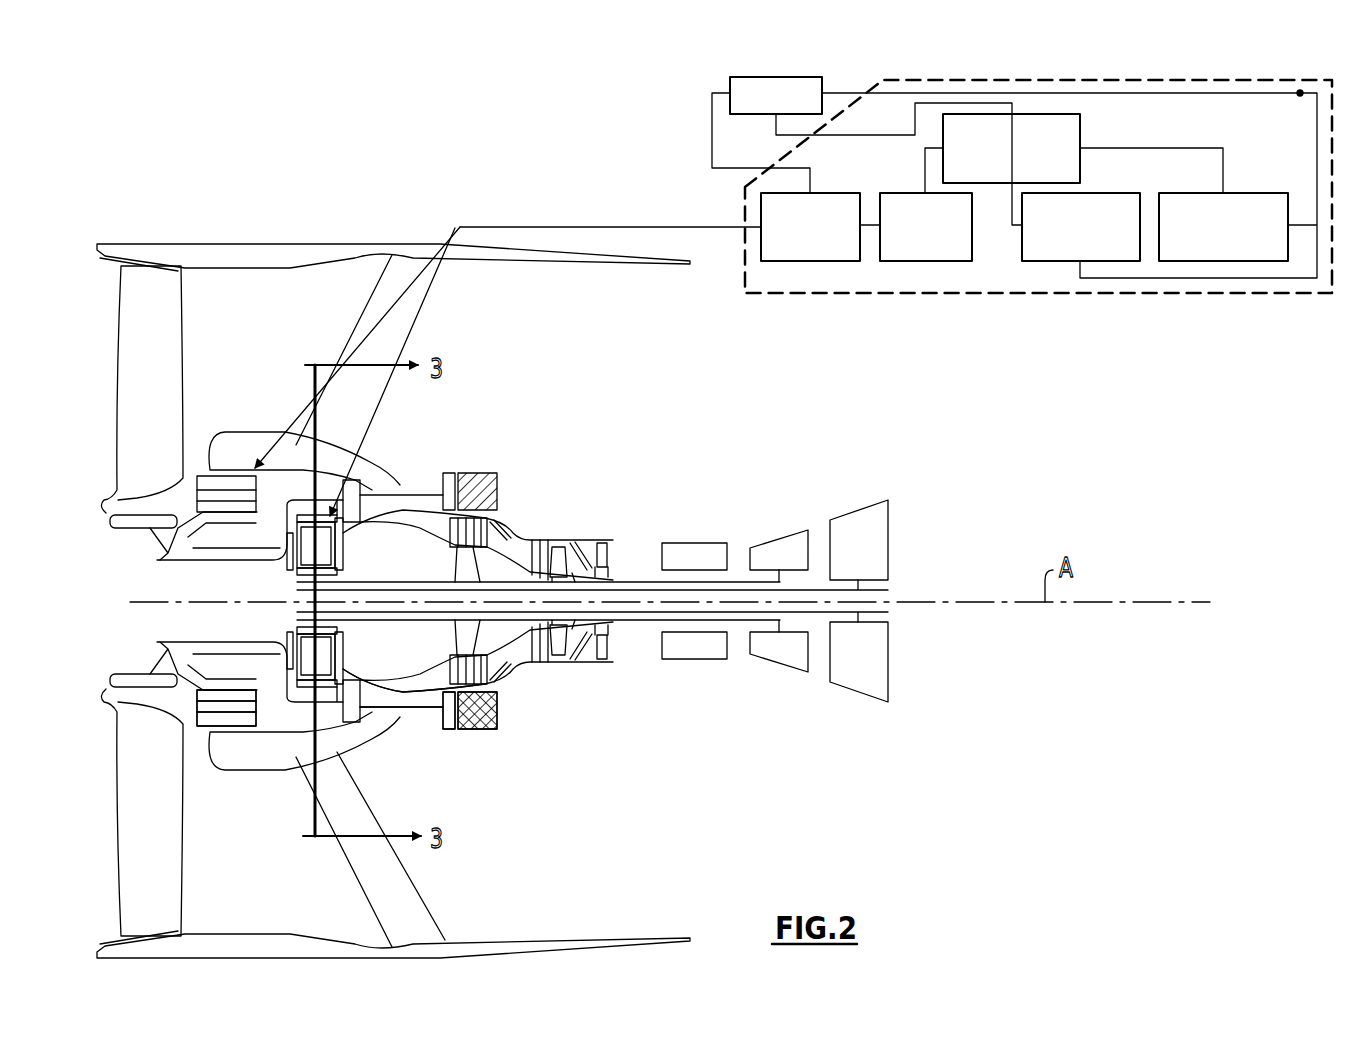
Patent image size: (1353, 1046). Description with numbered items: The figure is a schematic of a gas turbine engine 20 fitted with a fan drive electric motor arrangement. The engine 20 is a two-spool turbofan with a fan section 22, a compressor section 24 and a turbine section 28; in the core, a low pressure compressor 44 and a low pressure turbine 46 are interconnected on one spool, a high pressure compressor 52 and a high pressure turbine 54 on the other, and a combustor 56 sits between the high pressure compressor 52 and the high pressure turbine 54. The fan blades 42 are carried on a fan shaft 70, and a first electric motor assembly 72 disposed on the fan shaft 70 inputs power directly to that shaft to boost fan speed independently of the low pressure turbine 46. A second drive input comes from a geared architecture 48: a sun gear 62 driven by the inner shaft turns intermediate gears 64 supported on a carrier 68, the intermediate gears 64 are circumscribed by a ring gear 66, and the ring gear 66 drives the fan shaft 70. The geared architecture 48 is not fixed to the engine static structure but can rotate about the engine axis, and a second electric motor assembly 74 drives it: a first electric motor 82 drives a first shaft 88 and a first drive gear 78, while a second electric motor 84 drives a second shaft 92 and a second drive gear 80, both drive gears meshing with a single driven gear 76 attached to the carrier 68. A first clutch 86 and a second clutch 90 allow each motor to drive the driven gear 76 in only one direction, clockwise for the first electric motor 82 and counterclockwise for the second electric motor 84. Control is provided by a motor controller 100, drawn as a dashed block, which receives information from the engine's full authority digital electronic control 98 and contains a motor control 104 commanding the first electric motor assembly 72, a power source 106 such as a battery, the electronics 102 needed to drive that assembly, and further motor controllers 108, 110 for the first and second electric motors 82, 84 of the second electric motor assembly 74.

The gas turbine engine 20 is at (419, 198).
The fan section 22 is at (97, 216).
The compressor section 24 is at (442, 408).
The turbine section 28 is at (750, 408).
The fan blades 42 is at (166, 405).
The low pressure compressor 44 is at (512, 518).
The low pressure turbine 46 is at (888, 527).
The geared architecture 48 is at (271, 662).
The high pressure compressor 52 is at (590, 532).
The high pressure turbine 54 is at (810, 550).
The combustor 56 is at (683, 543).
The sun gear 62 is at (300, 577).
The intermediate gears 64 is at (320, 555).
The ring gear 66 is at (370, 482).
The carrier 68 is at (343, 540).
The fan shaft 70 is at (193, 560).
The first electric motor assembly 72 is at (230, 466).
The second electric motor assembly 74 is at (420, 780).
The driven gear 76 is at (383, 497).
The first drive gear 78 is at (373, 463).
The second drive gear 80 is at (395, 727).
The first electric motor 82 is at (1077, 261).
The second electric motor 84 is at (1225, 261).
The first clutch 86 is at (455, 473).
The first shaft 88 is at (428, 490).
The second clutch 90 is at (450, 730).
The second shaft 92 is at (433, 712).
The Full Authority Digital Electronic Control (FADEC) 98 is at (758, 118).
The motor controller 100 is at (1047, 85).
The electronics 102 is at (1080, 130).
The motor control 104 is at (760, 210).
The power source 106 is at (900, 193).
The motor controller 108 is at (1118, 193).
The counter-clockwise motor control 110 is at (1240, 193).